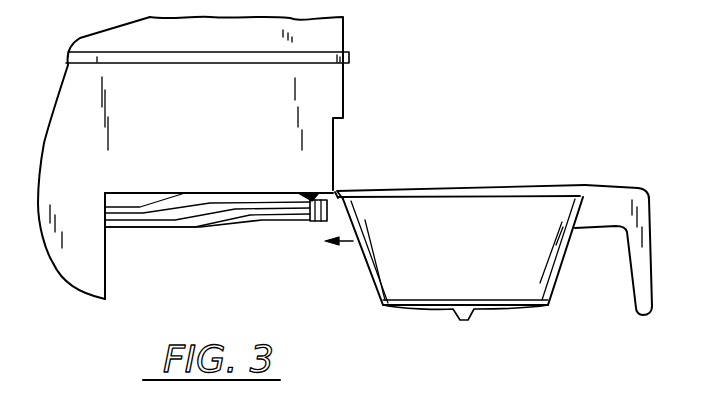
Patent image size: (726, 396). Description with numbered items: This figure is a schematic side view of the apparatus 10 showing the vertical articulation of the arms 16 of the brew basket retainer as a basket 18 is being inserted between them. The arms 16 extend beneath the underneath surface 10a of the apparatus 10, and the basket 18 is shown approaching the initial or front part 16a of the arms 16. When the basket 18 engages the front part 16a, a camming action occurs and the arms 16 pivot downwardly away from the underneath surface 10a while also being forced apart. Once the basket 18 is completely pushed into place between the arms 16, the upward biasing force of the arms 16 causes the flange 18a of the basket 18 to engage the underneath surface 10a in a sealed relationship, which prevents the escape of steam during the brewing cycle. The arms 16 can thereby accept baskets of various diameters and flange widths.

The apparatus 10 is at (498, 40).
The underneath surface 10a is at (128, 194).
The arms 16 is at (247, 218).
The front part of the arms 16a is at (288, 195).
The basket 18 is at (552, 302).
The flange 18a is at (338, 192).